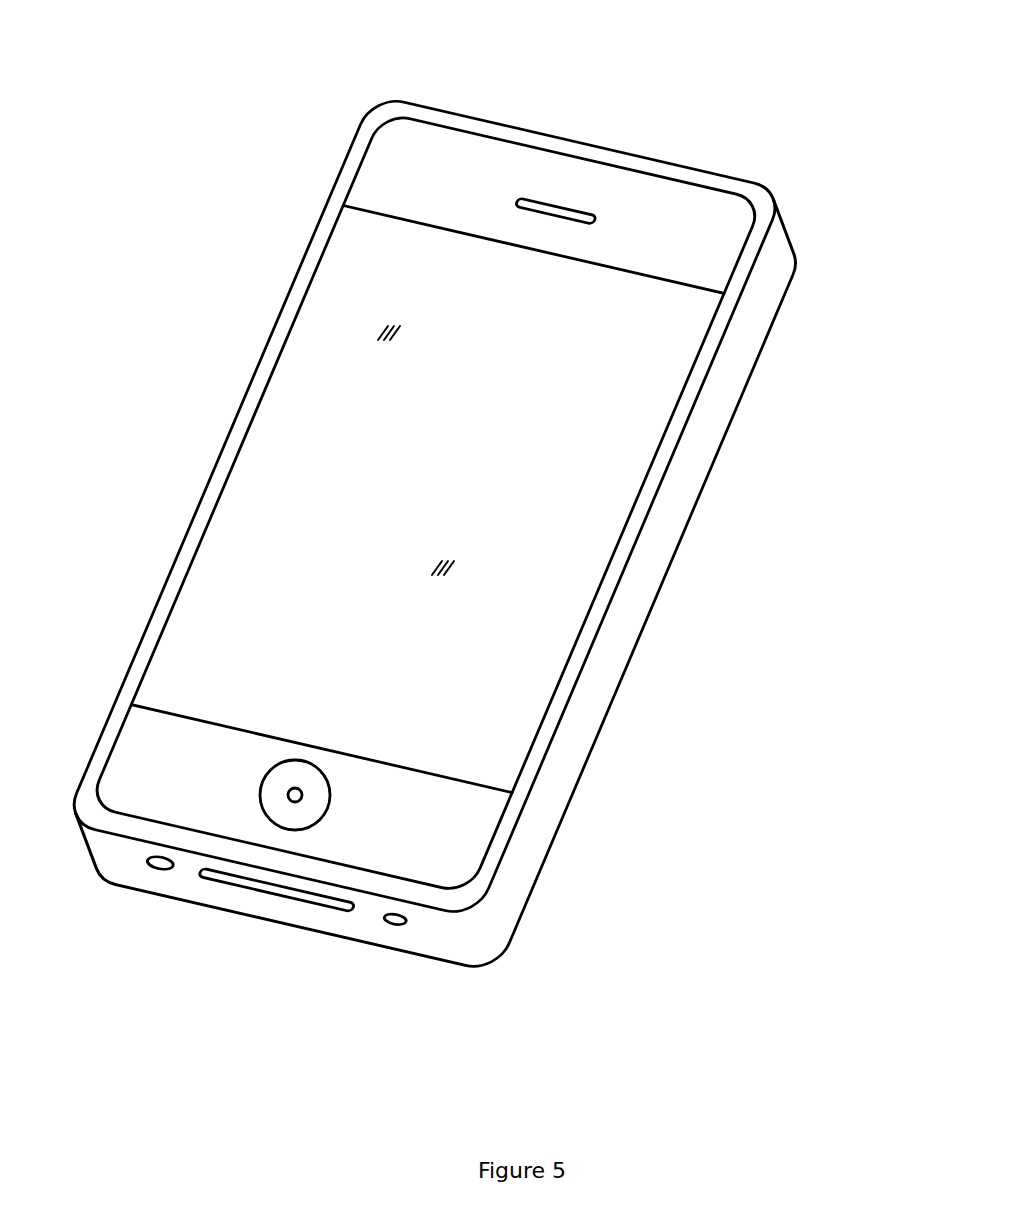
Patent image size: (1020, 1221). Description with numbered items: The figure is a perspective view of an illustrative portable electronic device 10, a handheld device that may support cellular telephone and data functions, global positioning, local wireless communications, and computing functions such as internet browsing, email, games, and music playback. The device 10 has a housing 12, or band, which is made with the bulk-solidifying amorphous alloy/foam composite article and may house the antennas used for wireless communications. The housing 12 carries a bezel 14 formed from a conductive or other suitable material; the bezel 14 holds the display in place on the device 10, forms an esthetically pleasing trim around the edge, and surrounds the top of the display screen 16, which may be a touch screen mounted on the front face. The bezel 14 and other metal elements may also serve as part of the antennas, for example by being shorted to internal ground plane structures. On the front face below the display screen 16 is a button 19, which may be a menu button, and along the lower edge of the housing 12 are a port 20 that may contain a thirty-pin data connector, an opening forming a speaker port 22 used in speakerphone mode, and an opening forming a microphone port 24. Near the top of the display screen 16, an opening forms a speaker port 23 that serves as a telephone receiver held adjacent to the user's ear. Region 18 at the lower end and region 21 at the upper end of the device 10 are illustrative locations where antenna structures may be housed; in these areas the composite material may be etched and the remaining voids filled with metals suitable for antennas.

The portable electronic device 10 is at (846, 156).
The housing 12 is at (585, 718).
The bezel 14 is at (250, 398).
The display screen 16 is at (680, 327).
The region 18 is at (107, 693).
The button 19 is at (283, 829).
The port 20 is at (320, 908).
The region 21 is at (815, 212).
The speaker port 22 is at (160, 870).
The speaker port 23 is at (529, 197).
The microphone port 24 is at (393, 926).